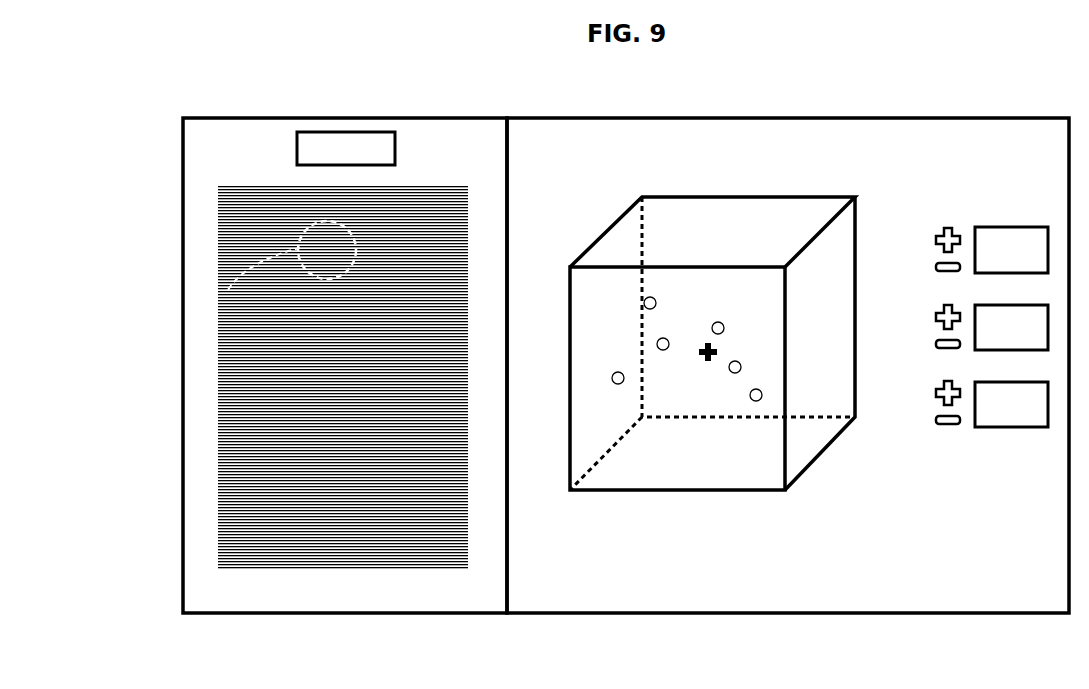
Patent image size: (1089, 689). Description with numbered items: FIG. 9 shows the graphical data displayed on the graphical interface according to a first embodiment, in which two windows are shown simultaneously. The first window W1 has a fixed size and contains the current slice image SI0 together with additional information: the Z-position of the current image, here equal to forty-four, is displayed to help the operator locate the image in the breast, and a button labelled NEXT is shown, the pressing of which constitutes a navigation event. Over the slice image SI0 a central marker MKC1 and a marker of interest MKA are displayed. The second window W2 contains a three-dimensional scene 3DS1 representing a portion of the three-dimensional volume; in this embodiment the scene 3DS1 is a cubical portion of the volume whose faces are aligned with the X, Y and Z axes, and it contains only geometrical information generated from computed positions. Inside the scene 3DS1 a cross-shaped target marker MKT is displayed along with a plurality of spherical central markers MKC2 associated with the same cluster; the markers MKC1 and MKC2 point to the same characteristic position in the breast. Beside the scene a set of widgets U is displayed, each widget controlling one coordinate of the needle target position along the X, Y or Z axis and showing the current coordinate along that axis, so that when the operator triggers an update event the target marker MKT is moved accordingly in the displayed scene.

The first window W1 is at (343, 117).
The second window W2 is at (788, 117).
The current slice image SI0 is at (216, 481).
The central marker MKC1 is at (305, 235).
The marker of interest MKA is at (228, 290).
The spherical central markers MKC2 is at (655, 298).
The cross-shaped target marker MKT is at (703, 360).
The 3D scene 3DS1 is at (831, 456).
The coordinate input user interface U is at (987, 207).